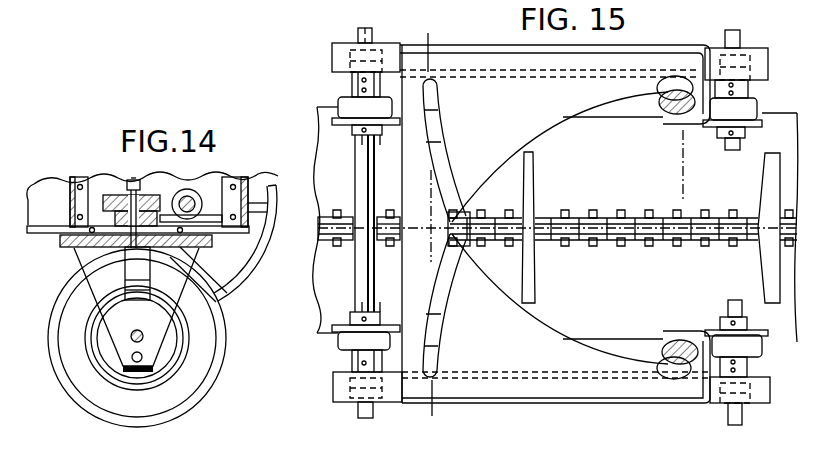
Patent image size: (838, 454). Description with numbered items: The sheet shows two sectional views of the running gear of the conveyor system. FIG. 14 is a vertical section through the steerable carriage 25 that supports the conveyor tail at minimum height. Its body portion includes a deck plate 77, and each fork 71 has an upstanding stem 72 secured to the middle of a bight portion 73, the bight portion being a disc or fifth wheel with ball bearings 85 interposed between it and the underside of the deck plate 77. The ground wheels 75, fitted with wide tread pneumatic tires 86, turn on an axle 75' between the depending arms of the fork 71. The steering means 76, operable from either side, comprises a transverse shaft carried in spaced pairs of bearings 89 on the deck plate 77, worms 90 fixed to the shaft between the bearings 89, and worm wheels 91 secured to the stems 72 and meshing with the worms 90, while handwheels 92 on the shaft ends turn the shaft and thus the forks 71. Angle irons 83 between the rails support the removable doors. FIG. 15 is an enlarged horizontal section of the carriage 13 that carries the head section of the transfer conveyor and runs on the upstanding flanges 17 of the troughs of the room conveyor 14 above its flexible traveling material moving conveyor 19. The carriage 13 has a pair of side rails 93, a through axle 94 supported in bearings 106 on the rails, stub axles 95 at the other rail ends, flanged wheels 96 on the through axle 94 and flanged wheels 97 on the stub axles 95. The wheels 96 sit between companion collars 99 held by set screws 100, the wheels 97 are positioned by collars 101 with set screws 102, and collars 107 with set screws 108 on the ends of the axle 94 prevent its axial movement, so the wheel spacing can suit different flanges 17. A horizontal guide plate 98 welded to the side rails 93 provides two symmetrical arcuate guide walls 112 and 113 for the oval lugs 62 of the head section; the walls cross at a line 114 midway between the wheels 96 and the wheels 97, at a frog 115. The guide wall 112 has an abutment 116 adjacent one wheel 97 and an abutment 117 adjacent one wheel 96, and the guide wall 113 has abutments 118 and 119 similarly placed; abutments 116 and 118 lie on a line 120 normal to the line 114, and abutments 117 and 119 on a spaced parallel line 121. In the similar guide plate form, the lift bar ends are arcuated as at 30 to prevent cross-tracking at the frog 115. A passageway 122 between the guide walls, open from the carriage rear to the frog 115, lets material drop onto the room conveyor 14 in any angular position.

In FIG. 15, the carriage 13 is at (335, 404).
In FIG. 15, the room conveyor 14 is at (795, 348).
In FIG. 15, the upstanding flanges 17 is at (325, 341).
In FIG. 15, the flexible traveling material moving conveyor 19 is at (625, 246).
In FIG. 14, the carriage 25 is at (46, 283).
In FIG. 15, the arcuate ends of lift bar 30 is at (320, 298).
In FIG. 15, the lugs 62 is at (665, 114).
In FIG. 14, the forks 71 is at (102, 292).
In FIG. 14, the upstanding stem 72 is at (132, 180).
In FIG. 14, the bight portion 73 is at (70, 236).
In FIG. 14, the ground wheels 75 is at (156, 338).
In FIG. 14, the axle 75' is at (147, 333).
In FIG. 14, the steering means 76 is at (243, 165).
In FIG. 14, the deck plate 77 is at (225, 233).
In FIG. 14, the angle irons 83 is at (72, 197).
In FIG. 14, the ball bearings 85 is at (182, 248).
In FIG. 14, the wide tread pneumatic tires 86 is at (187, 394).
In FIG. 14, the bearings 89 is at (213, 214).
In FIG. 14, the worms 90 is at (179, 197).
In FIG. 14, the worm wheels 91 is at (124, 197).
In FIG. 14, the handwheels 92 is at (246, 275).
In FIG. 15, the side rails 93 is at (392, 46).
In FIG. 15, the through axle 94 is at (366, 191).
In FIG. 15, the stub axles 95 is at (742, 40).
In FIG. 15, the flanged wheels 96 is at (348, 100).
In FIG. 15, the flanged wheels 97 is at (758, 105).
In FIG. 15, the guide plate 98 is at (488, 86).
In FIG. 15, the collars 99 is at (352, 90).
In FIG. 15, the set screws 100 is at (366, 136).
In FIG. 15, the collars 101 is at (757, 96).
In FIG. 15, the set screws 102 is at (727, 139).
In FIG. 15, the bearings 106 is at (333, 50).
In FIG. 15, the collars 107 is at (345, 60).
In FIG. 15, the set screws 108 is at (370, 366).
In FIG. 15, the arcuate guide wall 112 is at (556, 125).
In FIG. 15, the arcuate guide wall 113 is at (570, 330).
In FIG. 15, the line 114 is at (432, 234).
In FIG. 15, the frog 115 is at (462, 215).
In FIG. 15, the abutment 116 is at (648, 92).
In FIG. 15, the abutment 117 is at (438, 348).
In FIG. 15, the abutment 118 is at (672, 380).
In FIG. 15, the abutment 119 is at (438, 96).
In FIG. 15, the line 120 is at (688, 197).
In FIG. 15, the line 121 is at (429, 205).
In FIG. 15, the passageway 122 is at (617, 193).